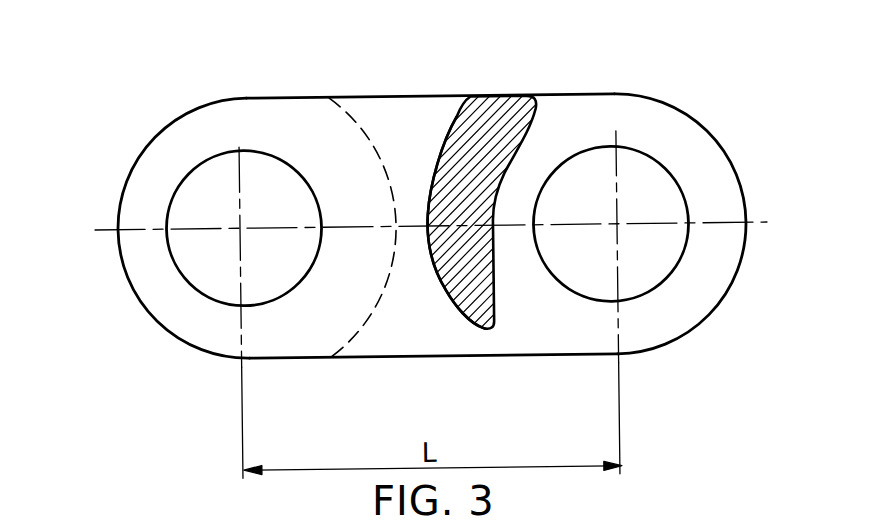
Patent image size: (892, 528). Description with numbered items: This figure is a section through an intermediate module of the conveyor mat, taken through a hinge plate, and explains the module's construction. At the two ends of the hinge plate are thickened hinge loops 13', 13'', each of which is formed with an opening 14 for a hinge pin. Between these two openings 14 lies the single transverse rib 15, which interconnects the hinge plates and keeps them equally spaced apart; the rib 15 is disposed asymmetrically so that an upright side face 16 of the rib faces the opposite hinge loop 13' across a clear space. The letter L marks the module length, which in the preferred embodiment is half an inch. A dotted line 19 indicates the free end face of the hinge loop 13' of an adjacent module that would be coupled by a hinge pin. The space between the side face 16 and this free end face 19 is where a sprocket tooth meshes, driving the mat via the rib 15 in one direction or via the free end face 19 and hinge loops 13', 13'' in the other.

The hinge loop 13' is at (150, 229).
The hinge loop 13'' is at (725, 222).
The opening 14 is at (212, 242).
The transverse rib 15 is at (508, 118).
The side face 16 is at (441, 292).
The dotted line 19 is at (359, 124).